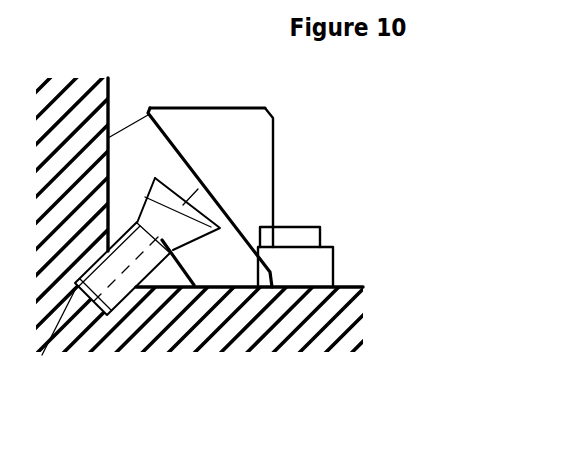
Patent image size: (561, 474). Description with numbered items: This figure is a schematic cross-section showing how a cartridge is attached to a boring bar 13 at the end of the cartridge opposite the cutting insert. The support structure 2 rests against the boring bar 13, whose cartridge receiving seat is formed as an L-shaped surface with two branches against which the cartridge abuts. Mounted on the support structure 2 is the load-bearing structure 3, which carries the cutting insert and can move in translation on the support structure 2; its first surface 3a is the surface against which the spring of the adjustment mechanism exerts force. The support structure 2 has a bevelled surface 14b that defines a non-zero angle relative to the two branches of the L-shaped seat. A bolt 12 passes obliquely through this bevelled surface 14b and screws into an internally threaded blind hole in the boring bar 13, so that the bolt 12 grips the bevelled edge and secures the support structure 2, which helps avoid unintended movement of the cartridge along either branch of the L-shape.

The support structure 2 is at (315, 262).
The load-bearing structure 3 is at (258, 145).
The first surface of the load-bearing structure 3a is at (215, 107).
The bolt 12 is at (162, 205).
The boring bar 13 is at (263, 332).
The bevelled surface of the support structure 14b is at (178, 263).